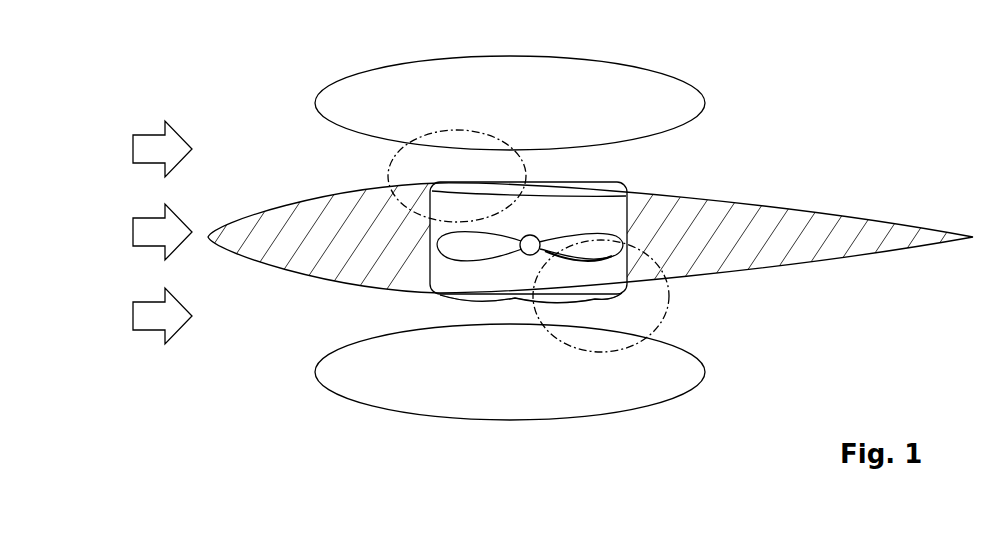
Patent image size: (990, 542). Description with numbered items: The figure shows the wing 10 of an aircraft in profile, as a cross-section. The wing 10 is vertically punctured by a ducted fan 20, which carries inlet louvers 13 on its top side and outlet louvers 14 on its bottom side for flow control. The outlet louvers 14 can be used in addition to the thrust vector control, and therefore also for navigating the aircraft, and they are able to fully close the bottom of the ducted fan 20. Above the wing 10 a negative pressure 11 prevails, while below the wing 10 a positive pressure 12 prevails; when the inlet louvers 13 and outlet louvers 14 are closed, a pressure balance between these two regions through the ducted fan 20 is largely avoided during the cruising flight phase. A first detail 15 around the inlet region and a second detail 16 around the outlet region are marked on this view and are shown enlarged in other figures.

The wing 10 is at (280, 200).
The negative pressure 11 is at (503, 57).
The positive pressure 12 is at (507, 420).
The inlet louvers 13 is at (643, 174).
The outlet louvers 14 is at (621, 311).
The first detail 15 is at (380, 165).
The second detail 16 is at (671, 332).
The ducted fan 20 is at (642, 237).